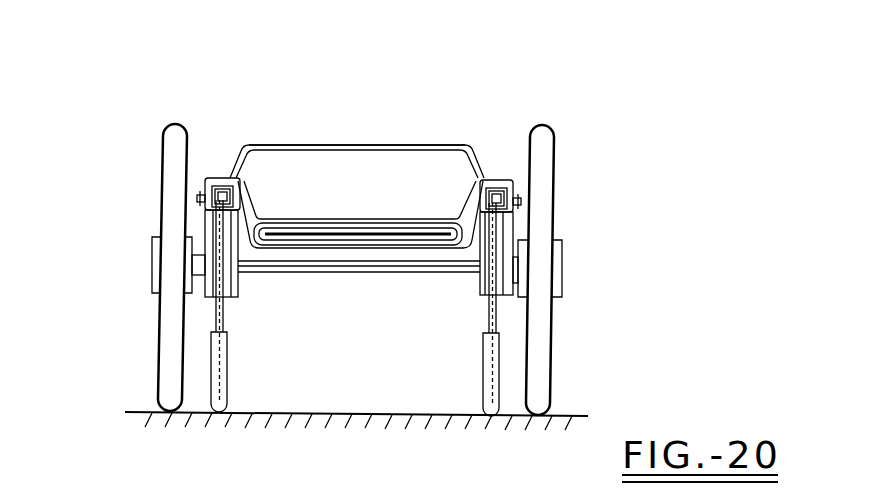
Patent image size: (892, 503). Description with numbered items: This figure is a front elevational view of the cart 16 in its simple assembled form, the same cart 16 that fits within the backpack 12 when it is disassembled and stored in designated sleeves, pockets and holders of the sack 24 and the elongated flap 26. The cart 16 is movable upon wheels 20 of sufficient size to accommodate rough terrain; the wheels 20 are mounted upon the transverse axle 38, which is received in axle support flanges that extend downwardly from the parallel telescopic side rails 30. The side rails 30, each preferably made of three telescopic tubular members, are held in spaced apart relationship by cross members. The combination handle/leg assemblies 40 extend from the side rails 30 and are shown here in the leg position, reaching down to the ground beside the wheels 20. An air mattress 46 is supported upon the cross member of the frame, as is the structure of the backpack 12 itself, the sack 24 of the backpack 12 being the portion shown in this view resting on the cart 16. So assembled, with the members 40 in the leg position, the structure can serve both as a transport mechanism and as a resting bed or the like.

The backpack 12 is at (272, 136).
The cart 16 is at (348, 110).
The wheels 20 is at (165, 328).
The sack 24 is at (399, 140).
The elongated flap 26 is at (388, 264).
The telescopic side rails 30 is at (219, 170).
The axle 38 is at (346, 274).
The combination handle/leg assemblies 40 is at (222, 362).
The air mattress 46 is at (350, 232).